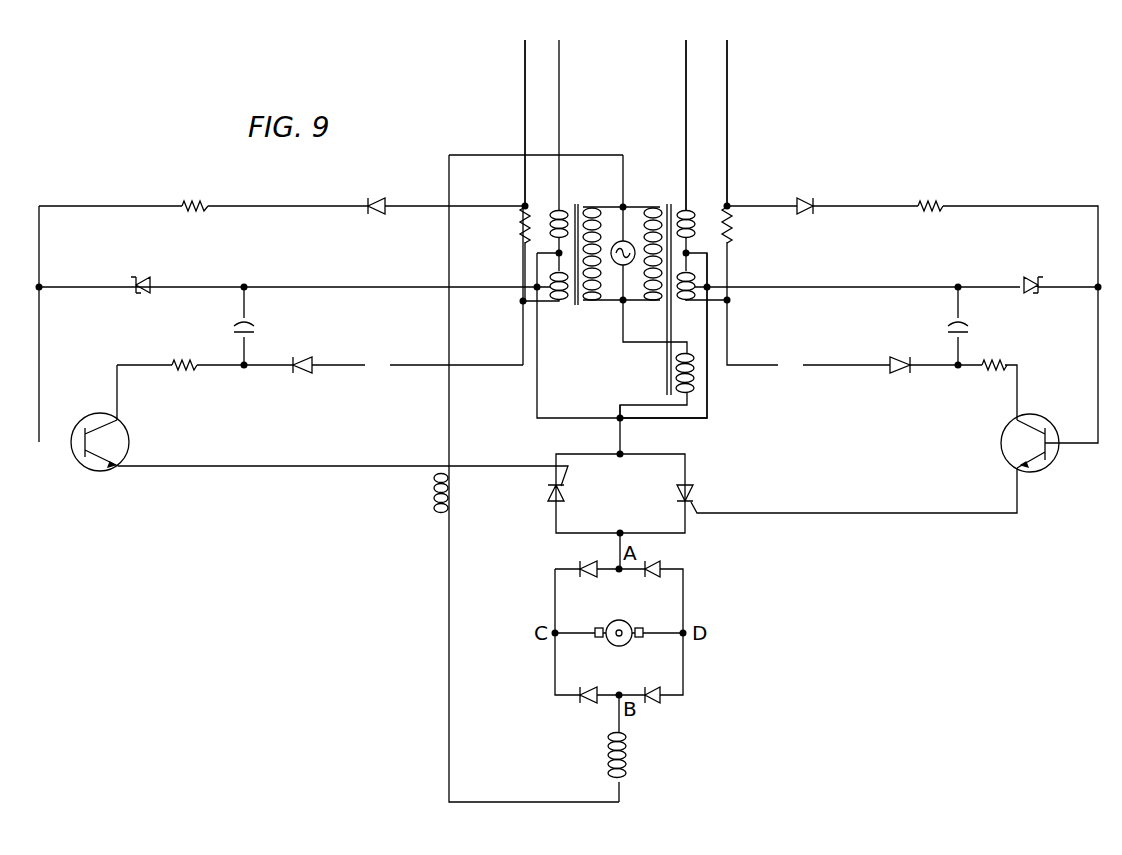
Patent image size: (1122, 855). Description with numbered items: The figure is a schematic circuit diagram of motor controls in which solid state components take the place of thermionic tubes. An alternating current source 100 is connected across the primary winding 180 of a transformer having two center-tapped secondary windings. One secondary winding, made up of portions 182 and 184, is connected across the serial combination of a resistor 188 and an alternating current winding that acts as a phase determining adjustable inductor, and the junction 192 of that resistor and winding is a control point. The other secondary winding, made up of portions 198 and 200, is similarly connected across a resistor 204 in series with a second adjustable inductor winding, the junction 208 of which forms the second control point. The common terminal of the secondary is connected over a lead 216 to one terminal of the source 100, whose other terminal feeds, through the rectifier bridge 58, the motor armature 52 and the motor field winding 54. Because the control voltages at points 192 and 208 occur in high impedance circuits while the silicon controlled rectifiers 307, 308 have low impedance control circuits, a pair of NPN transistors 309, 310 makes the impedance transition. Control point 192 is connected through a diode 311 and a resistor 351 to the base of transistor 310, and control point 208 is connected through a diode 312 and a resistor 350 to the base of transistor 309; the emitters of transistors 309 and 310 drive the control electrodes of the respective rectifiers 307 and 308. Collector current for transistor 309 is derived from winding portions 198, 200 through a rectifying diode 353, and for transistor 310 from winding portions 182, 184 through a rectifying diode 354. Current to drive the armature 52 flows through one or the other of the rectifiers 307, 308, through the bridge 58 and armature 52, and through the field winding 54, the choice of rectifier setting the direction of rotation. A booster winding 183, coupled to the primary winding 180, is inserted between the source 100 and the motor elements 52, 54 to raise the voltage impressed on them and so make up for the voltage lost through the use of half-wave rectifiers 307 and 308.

The resistor 350 is at (194, 202).
The diode 312 is at (383, 186).
The junction 208 is at (525, 206).
The resistor 204 is at (520, 224).
The secondary winding portion 198 is at (548, 236).
The secondary winding portion 200 is at (553, 303).
The primary winding 180 is at (600, 211).
The alternating current source 100 is at (626, 266).
The secondary winding portion 184 is at (684, 210).
The secondary winding portion 182 is at (698, 303).
The booster winding 183 is at (696, 380).
The lead 216 is at (708, 420).
The junction 192 is at (728, 205).
The resistor 188 is at (735, 226).
The diode 311 is at (806, 212).
The resistor 351 is at (928, 202).
The rectifying diode 353 is at (301, 357).
The rectifying diode 354 is at (898, 356).
The transistor 309 is at (97, 470).
The transistor 310 is at (1037, 468).
The silicon controlled rectifier 307 is at (548, 490).
The silicon controlled rectifier 308 is at (689, 494).
The rectifier bridge 58 is at (667, 668).
The motor armature 52 is at (627, 625).
The motor field winding 54 is at (628, 755).